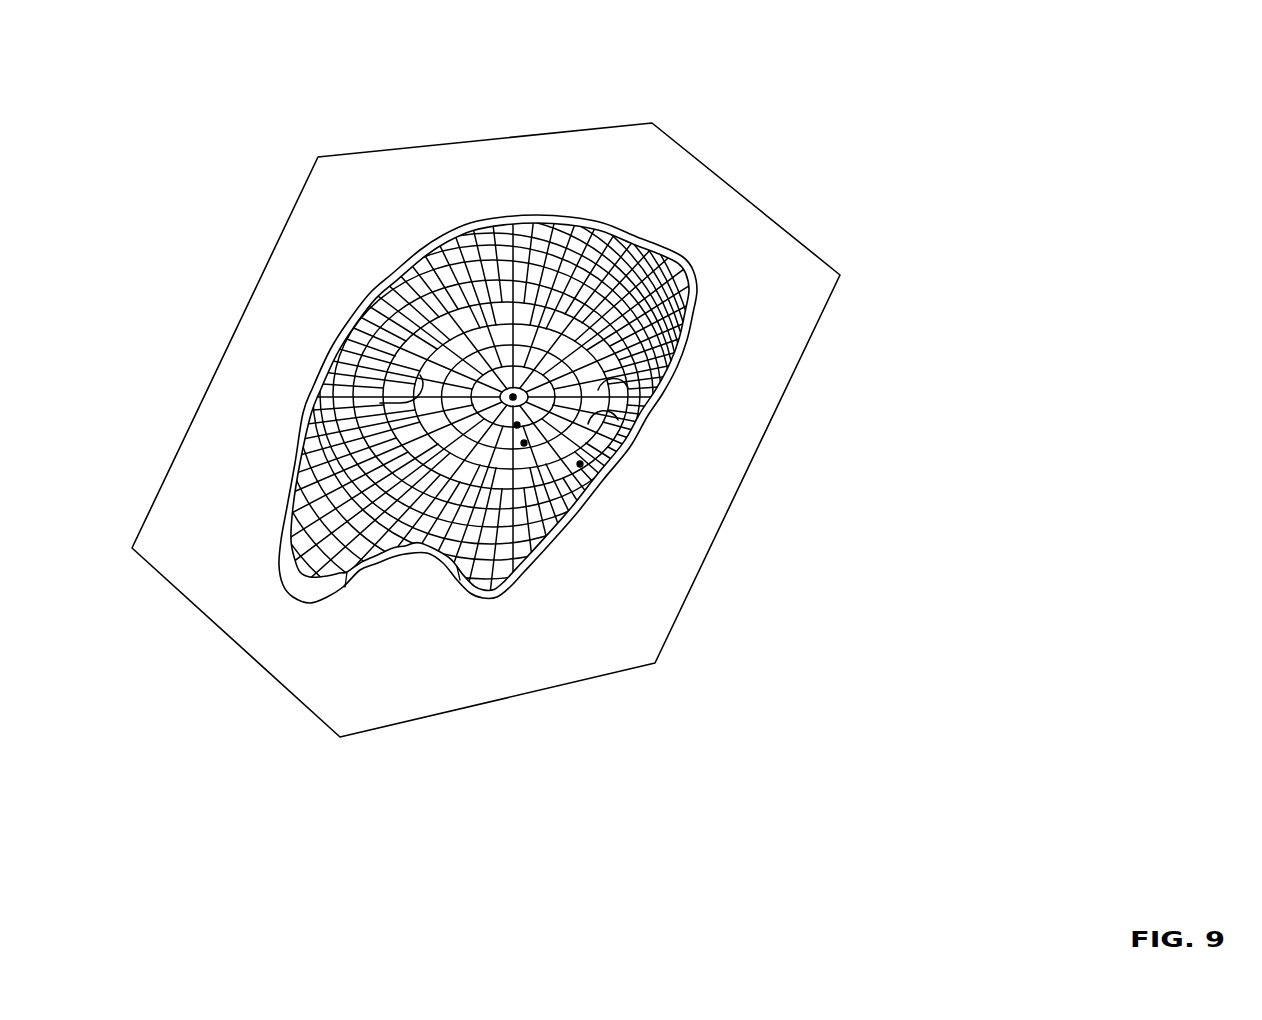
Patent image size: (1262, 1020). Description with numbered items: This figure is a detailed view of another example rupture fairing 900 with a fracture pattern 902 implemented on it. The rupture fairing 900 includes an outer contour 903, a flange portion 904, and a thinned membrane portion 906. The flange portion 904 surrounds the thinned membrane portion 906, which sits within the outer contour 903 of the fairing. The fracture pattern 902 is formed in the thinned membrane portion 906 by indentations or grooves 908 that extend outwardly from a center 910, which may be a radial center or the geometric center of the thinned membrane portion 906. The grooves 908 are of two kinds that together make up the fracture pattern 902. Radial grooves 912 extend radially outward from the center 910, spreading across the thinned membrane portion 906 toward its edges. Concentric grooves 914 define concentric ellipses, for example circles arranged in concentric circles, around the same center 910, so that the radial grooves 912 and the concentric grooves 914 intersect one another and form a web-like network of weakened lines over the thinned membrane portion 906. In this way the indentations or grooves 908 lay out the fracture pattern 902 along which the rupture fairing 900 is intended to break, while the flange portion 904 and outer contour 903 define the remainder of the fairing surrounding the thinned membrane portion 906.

The rupture fairing 900 is at (899, 61).
The fracture pattern 902 is at (668, 236).
The outer contour 903 is at (357, 153).
The flange portion 904 is at (374, 227).
The thinned membrane portion 906 is at (700, 330).
The indentations or grooves 908 is at (505, 232).
The center 910 is at (508, 395).
The radial grooves 912 is at (590, 412).
The concentric grooves 914 is at (517, 425).